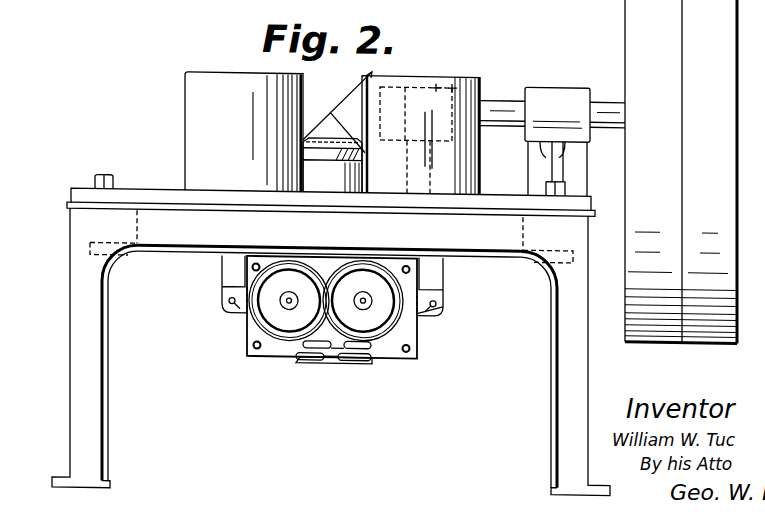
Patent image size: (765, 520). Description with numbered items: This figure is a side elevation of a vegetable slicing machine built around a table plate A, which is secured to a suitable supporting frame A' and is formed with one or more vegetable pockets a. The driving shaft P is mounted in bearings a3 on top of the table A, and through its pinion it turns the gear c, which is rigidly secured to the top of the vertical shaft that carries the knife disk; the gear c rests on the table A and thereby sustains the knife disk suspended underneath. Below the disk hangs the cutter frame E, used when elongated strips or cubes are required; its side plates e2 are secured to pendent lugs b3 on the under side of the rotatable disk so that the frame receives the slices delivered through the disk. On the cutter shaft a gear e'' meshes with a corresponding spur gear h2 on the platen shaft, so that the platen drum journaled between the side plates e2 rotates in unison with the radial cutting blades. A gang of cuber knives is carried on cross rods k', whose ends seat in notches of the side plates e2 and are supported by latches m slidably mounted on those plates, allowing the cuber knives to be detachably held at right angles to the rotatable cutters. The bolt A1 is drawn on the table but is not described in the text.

The vegetable pocket a is at (332, 133).
The gear c is at (337, 132).
The bearing a3 is at (557, 141).
The driving shaft P is at (501, 95).
The table plate A is at (331, 190).
The bolt A1 is at (512, 196).
The supporting frame A' is at (331, 352).
The pendent lug b3 is at (455, 270).
The gear e'' is at (264, 310).
The side plate e2 is at (363, 310).
The cutter frame E is at (280, 383).
The cross rod k' is at (332, 375).
The latch m is at (354, 356).
The spur gear h2 is at (408, 316).